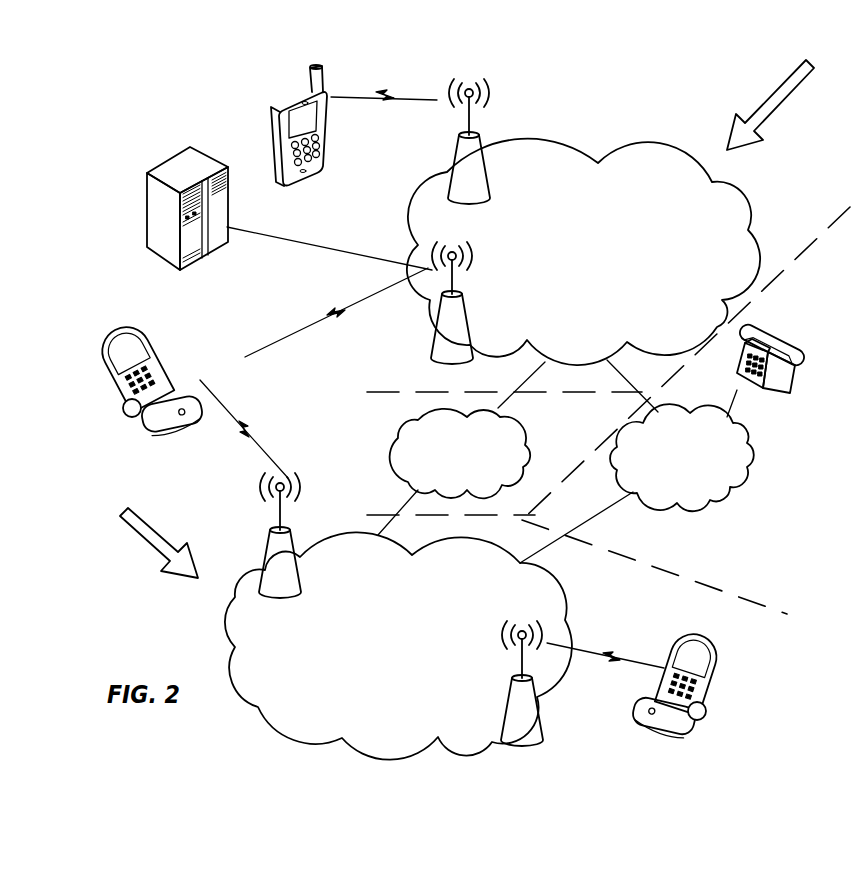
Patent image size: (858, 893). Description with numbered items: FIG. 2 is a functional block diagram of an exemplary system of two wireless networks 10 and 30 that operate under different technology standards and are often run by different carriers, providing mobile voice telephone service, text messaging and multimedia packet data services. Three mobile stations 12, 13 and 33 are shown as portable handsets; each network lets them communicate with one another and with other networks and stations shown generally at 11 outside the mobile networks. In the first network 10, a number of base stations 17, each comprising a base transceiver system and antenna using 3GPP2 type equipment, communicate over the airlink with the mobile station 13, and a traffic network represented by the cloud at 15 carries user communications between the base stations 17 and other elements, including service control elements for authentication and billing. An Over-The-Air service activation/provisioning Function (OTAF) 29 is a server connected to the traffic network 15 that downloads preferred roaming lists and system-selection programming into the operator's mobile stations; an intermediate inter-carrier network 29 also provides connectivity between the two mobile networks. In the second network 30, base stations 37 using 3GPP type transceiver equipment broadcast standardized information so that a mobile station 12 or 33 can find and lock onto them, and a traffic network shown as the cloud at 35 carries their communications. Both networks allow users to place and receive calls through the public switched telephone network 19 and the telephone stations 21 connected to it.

The wireless network 10 is at (784, 97).
The other networks and stations 11 is at (715, 531).
The mobile station 12 is at (160, 367).
The mobile station 13 is at (268, 110).
The traffic network 15 is at (752, 208).
The base station 17 is at (455, 153).
The public switched telephone network 19 is at (747, 443).
The telephone station 21 is at (790, 376).
The Over-The-Air service activation/provisioning Function 29 is at (528, 462).
The wireless network 30 is at (150, 534).
The mobile station 33 is at (730, 665).
The traffic network 35 is at (563, 605).
The base station 37 is at (267, 548).